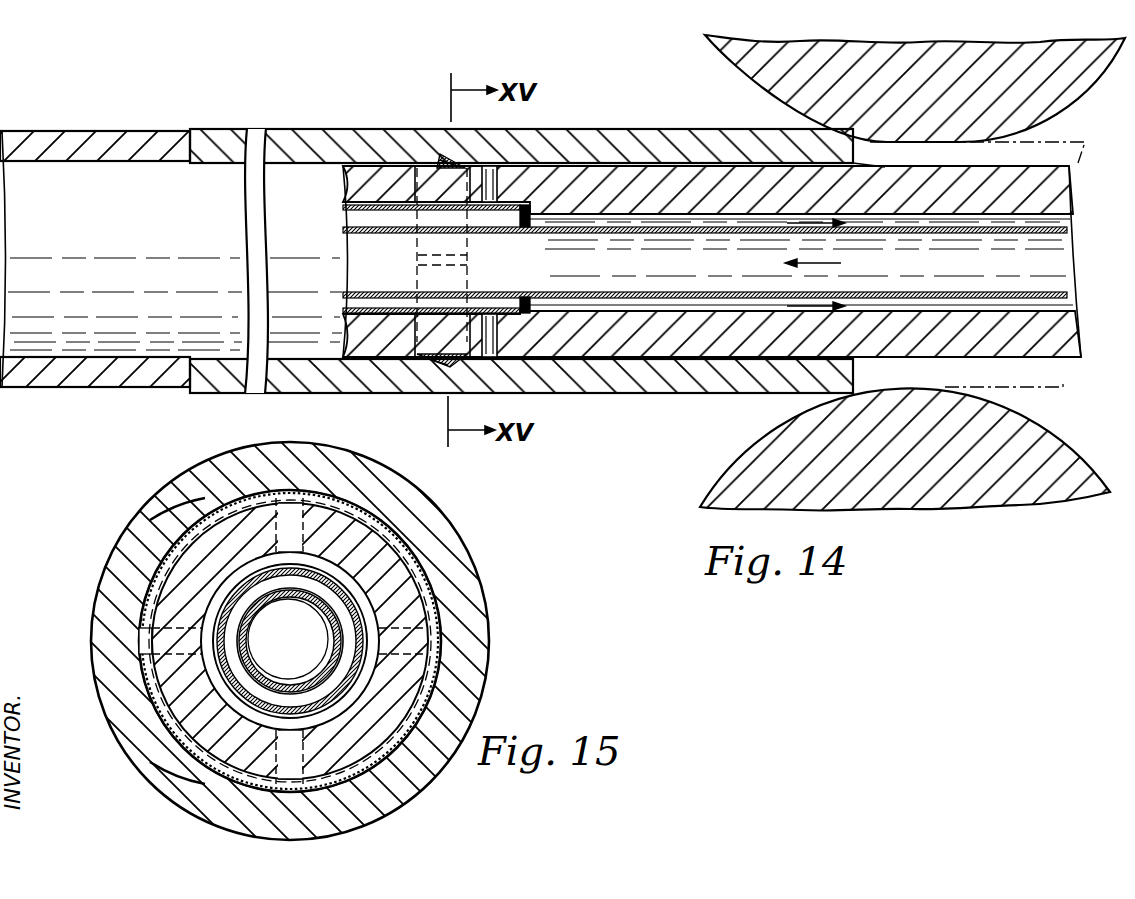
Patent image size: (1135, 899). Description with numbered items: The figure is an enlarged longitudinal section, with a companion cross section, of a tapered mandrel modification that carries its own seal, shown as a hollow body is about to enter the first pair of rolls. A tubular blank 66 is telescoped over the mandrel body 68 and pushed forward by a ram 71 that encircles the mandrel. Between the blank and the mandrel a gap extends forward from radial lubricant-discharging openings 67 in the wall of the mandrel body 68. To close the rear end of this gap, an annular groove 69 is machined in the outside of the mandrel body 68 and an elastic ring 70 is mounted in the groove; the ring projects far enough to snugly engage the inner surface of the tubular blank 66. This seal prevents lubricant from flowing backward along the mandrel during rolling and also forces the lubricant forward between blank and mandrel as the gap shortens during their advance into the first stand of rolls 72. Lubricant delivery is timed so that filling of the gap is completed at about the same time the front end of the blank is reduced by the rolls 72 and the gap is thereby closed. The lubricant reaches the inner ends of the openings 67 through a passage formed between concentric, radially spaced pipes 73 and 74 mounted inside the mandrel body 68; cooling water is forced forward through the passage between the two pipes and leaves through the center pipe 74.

In FIG. 14, the tubular blank 66 is at (290, 132).
In FIG. 15, the tubular blank 66 is at (108, 607).
In FIG. 14, the radial lubricant-discharging openings 67 is at (490, 175).
In FIG. 15, the radial lubricant-discharging openings 67 is at (395, 630).
In FIG. 14, the mandrel body 68 is at (1043, 202).
In FIG. 15, the mandrel body 68 is at (395, 575).
In FIG. 14, the annular groove 69 is at (446, 158).
In FIG. 15, the annular groove 69 is at (167, 545).
In FIG. 14, the elastic ring 70 is at (432, 357).
In FIG. 15, the elastic ring 70 is at (152, 690).
In FIG. 14, the ram 71 is at (62, 136).
In FIG. 14, the first stand of rolls 72 is at (1040, 90).
In FIG. 14, the outer pipe 73 is at (343, 208).
In FIG. 15, the outer pipe 73 is at (323, 698).
In FIG. 14, the center pipe 74 is at (345, 294).
In FIG. 15, the center pipe 74 is at (259, 602).